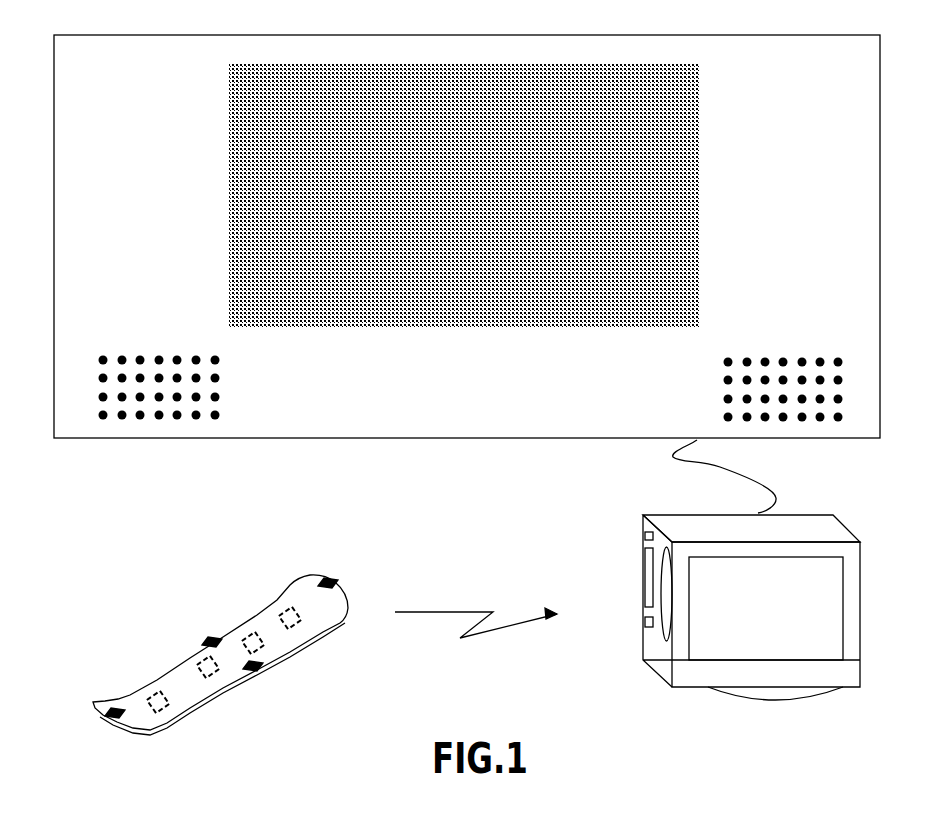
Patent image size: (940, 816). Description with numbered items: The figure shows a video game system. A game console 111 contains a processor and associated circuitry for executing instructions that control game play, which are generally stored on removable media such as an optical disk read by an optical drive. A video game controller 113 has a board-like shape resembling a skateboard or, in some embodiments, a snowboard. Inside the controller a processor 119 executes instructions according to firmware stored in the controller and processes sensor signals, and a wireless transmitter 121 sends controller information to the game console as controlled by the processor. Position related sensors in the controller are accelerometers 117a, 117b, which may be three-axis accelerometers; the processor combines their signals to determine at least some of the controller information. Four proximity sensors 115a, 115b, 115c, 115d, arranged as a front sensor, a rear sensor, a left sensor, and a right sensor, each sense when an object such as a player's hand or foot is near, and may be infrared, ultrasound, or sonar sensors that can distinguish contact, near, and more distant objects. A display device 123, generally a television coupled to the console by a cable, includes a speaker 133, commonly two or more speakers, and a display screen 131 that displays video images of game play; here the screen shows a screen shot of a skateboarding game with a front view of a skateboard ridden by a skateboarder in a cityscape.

The game console 111 is at (850, 688).
The video game controller 113 is at (236, 736).
The proximity sensor 115a is at (203, 638).
The proximity sensor 115b is at (328, 580).
The proximity sensor 115c is at (258, 670).
The proximity sensor 115d is at (113, 718).
The accelerometer 117a is at (292, 625).
The accelerometer 117b is at (160, 713).
The processor 119 is at (247, 633).
The wireless transmitter 121 is at (197, 663).
The display device 123 is at (485, 438).
The display screen 131 is at (482, 327).
The speaker 133 is at (223, 383).